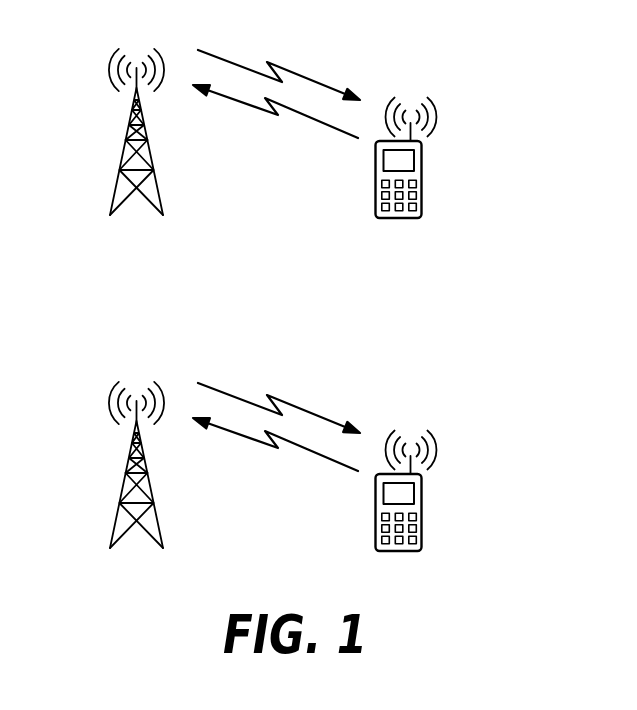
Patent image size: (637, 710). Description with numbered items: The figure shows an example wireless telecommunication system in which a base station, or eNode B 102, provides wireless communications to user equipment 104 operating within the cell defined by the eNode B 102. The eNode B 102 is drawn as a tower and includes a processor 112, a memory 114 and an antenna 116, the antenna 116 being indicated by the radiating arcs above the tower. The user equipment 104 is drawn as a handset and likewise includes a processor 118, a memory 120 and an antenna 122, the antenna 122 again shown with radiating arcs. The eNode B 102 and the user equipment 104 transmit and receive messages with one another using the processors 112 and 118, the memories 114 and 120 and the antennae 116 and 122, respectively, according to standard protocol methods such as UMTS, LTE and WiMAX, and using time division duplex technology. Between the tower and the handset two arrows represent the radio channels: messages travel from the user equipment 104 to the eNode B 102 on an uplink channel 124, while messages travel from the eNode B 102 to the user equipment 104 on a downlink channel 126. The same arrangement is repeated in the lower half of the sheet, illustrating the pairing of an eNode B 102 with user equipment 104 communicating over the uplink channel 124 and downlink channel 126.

The eNode B 102 is at (150, 146).
The user equipment 104 is at (423, 158).
The processor 112 is at (132, 123).
The memory 114 is at (124, 162).
The antenna 116 is at (110, 57).
The processor 118 is at (382, 158).
The memory 120 is at (382, 195).
The antenna 122 is at (433, 110).
The uplink channel 124 is at (258, 107).
The downlink channel 126 is at (303, 76).